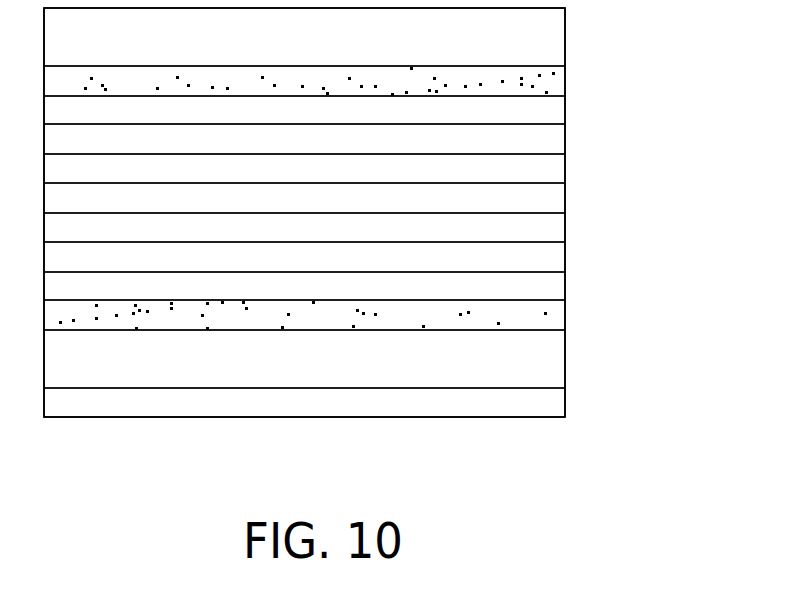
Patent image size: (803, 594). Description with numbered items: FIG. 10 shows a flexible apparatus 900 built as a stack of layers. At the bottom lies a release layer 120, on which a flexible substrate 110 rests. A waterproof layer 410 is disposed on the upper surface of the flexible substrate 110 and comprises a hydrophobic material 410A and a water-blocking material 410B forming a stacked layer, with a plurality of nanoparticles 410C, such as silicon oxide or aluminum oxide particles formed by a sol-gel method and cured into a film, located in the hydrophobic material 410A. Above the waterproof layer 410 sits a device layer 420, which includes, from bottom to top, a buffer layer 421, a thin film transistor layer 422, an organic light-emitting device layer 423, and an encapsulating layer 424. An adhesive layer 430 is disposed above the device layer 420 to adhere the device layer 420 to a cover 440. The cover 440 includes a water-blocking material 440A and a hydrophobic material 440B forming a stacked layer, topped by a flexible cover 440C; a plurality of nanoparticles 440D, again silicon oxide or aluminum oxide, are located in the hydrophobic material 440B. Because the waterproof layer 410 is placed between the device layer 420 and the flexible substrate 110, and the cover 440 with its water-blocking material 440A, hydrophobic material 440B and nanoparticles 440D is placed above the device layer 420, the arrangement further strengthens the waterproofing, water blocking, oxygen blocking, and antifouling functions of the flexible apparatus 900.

The flexible apparatus 900 is at (676, 494).
The cover 440 is at (371, 67).
The flexible cover 440C is at (555, 23).
The nanoparticles 440D is at (540, 74).
The hydrophobic material 440B is at (555, 80).
The water-blocking material 440A is at (555, 110).
The adhesive layer 430 is at (555, 140).
The device layer 420 is at (371, 214).
The encapsulating layer 424 is at (555, 169).
The organic light-emitting device layer 423 is at (555, 199).
The thin film transistor layer 422 is at (555, 228).
The buffer layer 421 is at (555, 258).
The waterproof layer 410 is at (371, 315).
The water-blocking material 410B is at (555, 286).
The hydrophobic material 410A is at (555, 316).
The nanoparticles 410C is at (498, 324).
The flexible substrate 110 is at (555, 373).
The release layer 120 is at (555, 403).